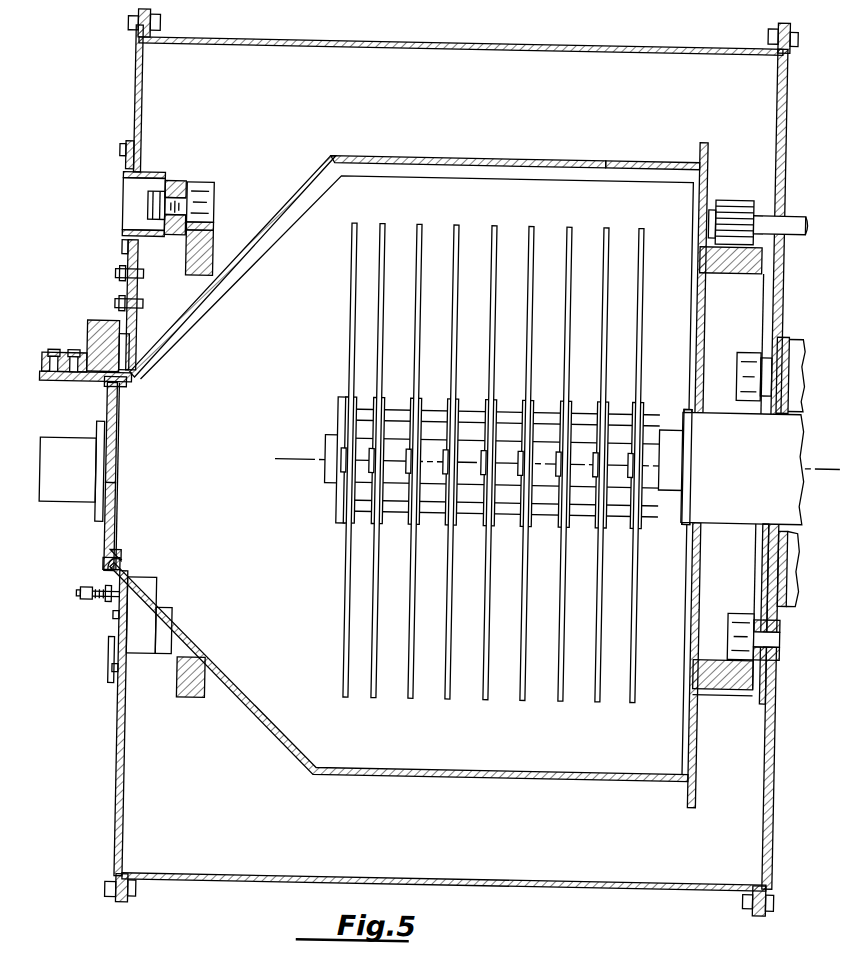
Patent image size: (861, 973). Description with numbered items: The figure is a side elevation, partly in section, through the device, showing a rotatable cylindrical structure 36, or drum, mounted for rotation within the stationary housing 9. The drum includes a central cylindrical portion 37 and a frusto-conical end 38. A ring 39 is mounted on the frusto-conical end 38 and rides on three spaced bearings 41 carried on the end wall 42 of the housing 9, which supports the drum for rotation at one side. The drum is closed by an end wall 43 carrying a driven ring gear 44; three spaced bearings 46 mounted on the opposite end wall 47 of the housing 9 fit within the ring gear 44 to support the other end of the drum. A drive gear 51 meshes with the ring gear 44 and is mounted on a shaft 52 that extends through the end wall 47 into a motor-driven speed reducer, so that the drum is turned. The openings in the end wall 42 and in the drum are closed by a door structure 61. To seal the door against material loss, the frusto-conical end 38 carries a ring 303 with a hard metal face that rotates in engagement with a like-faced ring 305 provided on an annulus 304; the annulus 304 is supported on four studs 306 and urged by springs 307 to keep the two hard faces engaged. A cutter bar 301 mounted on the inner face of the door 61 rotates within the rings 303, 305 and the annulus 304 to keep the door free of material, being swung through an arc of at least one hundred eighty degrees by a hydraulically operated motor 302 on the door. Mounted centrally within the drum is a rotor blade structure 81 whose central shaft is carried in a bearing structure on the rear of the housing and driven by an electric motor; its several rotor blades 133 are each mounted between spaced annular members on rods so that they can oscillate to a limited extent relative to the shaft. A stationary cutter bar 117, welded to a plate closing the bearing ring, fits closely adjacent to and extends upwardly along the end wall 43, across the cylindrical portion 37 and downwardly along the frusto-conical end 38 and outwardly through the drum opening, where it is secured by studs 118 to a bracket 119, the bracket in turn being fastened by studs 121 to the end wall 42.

The stationary housing 9 is at (552, 44).
The end wall 42 is at (137, 106).
The end wall 47 is at (771, 95).
The bearings 41 is at (197, 185).
The ring 39 is at (212, 245).
The frusto-conical end 38 is at (285, 200).
The rotatable cylindrical structure 36 is at (592, 157).
The central cylindrical portion 37 is at (648, 157).
The cutter bar 117 is at (548, 181).
The rotor blades 133 is at (347, 296).
The rotor blade structure 81 is at (340, 586).
The studs 121 is at (140, 281).
The bracket 119 is at (96, 330).
The studs 118 is at (53, 356).
The hydraulically operated motor 302 is at (78, 446).
The cutter bar 301 is at (119, 433).
The door structure 61 is at (104, 551).
The ring 305 is at (120, 559).
The ring 303 is at (123, 572).
The studs 306 is at (82, 600).
The springs 307 is at (97, 608).
The annulus 304 is at (116, 612).
The drive gear 51 is at (731, 194).
The shaft 52 is at (786, 208).
The bearings 46 is at (735, 607).
The driven ring gear 44 is at (722, 688).
The end wall 43 is at (703, 746).